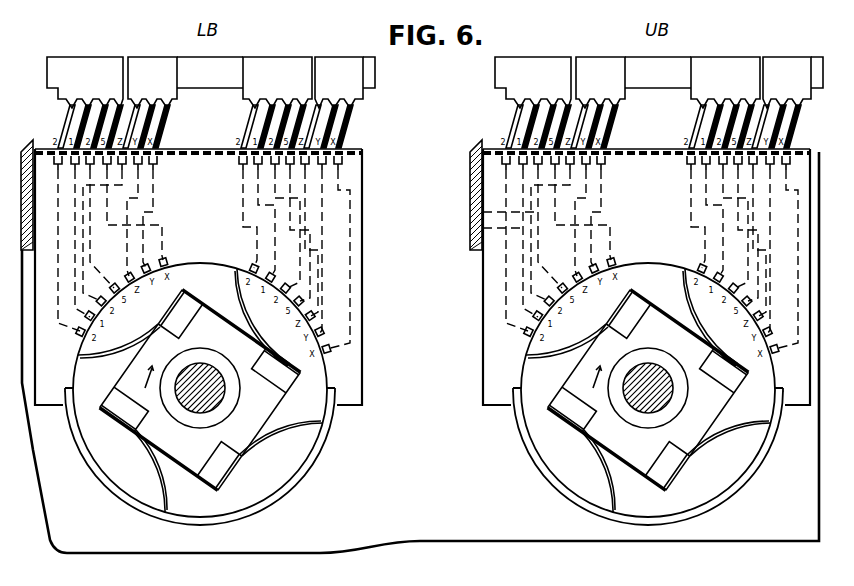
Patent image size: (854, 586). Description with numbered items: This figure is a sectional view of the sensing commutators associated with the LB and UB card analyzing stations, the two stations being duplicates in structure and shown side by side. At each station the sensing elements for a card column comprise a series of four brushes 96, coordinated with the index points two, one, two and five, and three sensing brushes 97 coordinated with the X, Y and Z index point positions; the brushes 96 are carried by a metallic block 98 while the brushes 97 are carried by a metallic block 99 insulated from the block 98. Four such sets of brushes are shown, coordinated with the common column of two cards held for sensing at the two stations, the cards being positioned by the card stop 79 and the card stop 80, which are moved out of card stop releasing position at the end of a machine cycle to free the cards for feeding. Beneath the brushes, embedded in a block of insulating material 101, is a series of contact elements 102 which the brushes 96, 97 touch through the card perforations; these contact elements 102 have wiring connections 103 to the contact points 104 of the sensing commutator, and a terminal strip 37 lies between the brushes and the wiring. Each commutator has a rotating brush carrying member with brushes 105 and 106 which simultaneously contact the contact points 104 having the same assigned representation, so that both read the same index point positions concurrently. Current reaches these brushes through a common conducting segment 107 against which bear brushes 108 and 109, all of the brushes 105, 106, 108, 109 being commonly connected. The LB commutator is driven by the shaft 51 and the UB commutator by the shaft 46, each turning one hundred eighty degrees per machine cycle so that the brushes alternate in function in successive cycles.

The metallic block 98 is at (88, 72).
The metallic block 99 is at (152, 72).
The brushes 96 is at (117, 127).
The sensing brushes 97 is at (152, 139).
The card stop 80 is at (29, 141).
The card stop 79 is at (468, 151).
The terminal strip 37 is at (221, 155).
The contact elements 102 is at (60, 166).
The wiring connections 103 is at (470, 231).
The contact points 104 is at (249, 268).
The brush 105 is at (108, 351).
The brush 106 is at (236, 283).
The brush 108 is at (163, 485).
The brush 109 is at (288, 438).
The common conducting segment 107 is at (271, 506).
The shaft 51 is at (215, 394).
The shaft 46 is at (658, 364).
The block of insulating material 101 is at (372, 350).